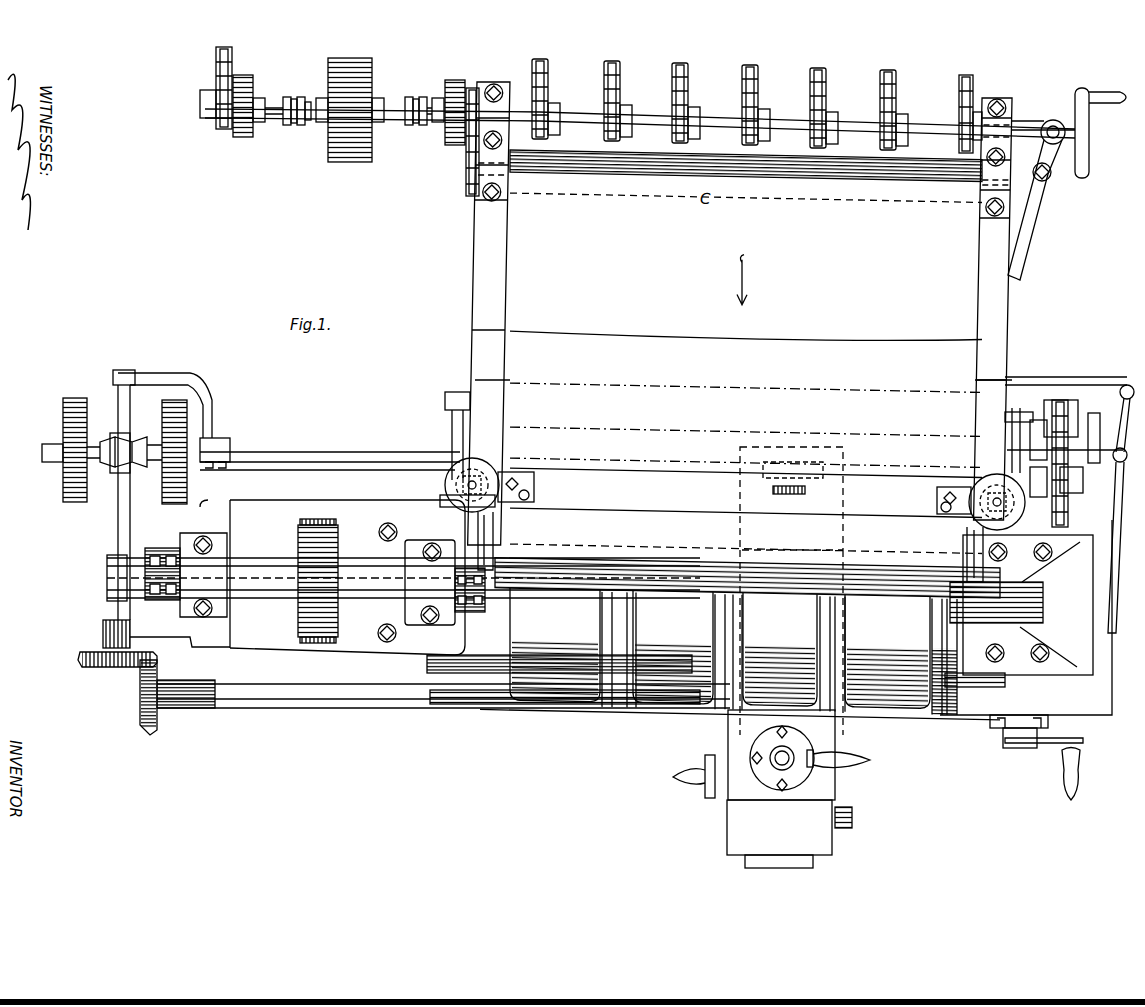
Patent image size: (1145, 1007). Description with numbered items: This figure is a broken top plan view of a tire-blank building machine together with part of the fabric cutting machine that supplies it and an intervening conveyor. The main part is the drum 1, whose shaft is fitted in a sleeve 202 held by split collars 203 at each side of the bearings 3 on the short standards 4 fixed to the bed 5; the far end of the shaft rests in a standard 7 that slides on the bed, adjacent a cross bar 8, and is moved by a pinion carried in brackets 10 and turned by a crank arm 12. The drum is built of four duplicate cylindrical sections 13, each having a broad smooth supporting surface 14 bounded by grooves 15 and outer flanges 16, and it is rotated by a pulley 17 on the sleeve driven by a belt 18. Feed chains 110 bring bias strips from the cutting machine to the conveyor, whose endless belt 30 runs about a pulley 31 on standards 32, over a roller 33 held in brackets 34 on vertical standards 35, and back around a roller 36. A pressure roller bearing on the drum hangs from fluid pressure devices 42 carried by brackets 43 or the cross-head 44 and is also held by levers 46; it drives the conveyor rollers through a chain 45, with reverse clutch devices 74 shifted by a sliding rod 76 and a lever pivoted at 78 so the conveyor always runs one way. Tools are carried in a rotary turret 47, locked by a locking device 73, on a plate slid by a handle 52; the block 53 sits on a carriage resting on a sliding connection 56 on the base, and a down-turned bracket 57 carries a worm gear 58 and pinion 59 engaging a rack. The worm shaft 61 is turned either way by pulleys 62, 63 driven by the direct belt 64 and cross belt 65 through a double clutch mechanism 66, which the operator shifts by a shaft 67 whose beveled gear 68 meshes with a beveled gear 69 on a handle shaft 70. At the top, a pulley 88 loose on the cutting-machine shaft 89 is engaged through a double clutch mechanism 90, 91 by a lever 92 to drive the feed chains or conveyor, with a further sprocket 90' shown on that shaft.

The drum 1 is at (494, 643).
The bearings 3 is at (403, 578).
The short standards 4 is at (694, 514).
The bed 5 is at (297, 576).
The standard 7 is at (1026, 617).
The cross bar 8 is at (996, 602).
The brackets 10 is at (1022, 720).
The crank arm 12 is at (1048, 743).
The cylindrical sections 13 is at (720, 648).
The supporting surface 14 is at (560, 700).
The grooves 15 is at (508, 700).
The flanges 16 is at (500, 676).
The pulley 17 is at (318, 581).
The belt 18 is at (316, 520).
The endless belt 30 is at (478, 281).
The pulley 31 is at (587, 198).
The standards 32 is at (478, 150).
The roller 33 is at (594, 556).
The brackets 34 is at (494, 530).
The vertical standards 35 is at (500, 447).
The roller 36 is at (708, 393).
The fluid pressure devices 42 is at (445, 485).
The brackets 43 is at (536, 487).
The cross-head 44 is at (666, 472).
The chain 45 is at (1068, 511).
The levers 46 is at (1016, 408).
The rotary turret 47 is at (752, 750).
The handle 52 is at (852, 808).
The block 53 is at (836, 778).
The sliding connection 56 is at (440, 501).
The down-turned bracket 57 is at (752, 445).
The worm gear 58 is at (810, 460).
The pinion 59 is at (770, 497).
The worm shaft 61 is at (330, 445).
The pulley 62 is at (48, 443).
The pulley 63 is at (180, 428).
The direct belt 64 is at (66, 400).
The cross belt 65 is at (170, 504).
The double clutch mechanism 66 is at (118, 465).
The shaft 67 is at (118, 537).
The beveled gear 68 is at (82, 658).
The beveled gear 69 is at (140, 722).
The shaft 70 is at (333, 700).
The locking device 73 is at (778, 765).
The reverse clutch device 74 is at (1064, 402).
The sliding rod 76 is at (1065, 453).
The main shaft 78 is at (1127, 385).
The pulley 88 is at (350, 162).
The shaft 89 is at (574, 116).
The double clutch mechanism 90 is at (342, 110).
The sprocket 90' is at (209, 88).
The double clutch mechanism 91 is at (348, 100).
The lever 92 is at (1027, 215).
The feeding chains 110 is at (675, 97).
The sleeve 202 is at (372, 575).
The split collars 203 is at (158, 598).